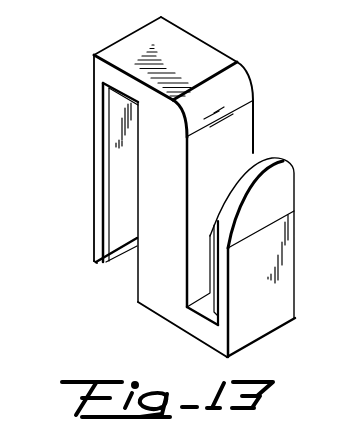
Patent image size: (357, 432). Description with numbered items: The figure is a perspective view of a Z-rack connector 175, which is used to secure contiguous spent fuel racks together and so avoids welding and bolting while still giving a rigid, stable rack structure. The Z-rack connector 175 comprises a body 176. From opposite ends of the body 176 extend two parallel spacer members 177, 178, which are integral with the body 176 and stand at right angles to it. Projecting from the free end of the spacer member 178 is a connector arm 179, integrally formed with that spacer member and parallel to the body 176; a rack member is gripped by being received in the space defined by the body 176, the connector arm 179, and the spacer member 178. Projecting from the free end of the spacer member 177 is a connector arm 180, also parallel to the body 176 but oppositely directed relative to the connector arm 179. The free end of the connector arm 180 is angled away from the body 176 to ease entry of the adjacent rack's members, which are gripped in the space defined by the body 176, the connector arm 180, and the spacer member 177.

The Z-rack connector 175 is at (265, 72).
The body 176 is at (157, 265).
The spacer member 177 is at (193, 327).
The spacer member 178 is at (118, 80).
The connector arm 179 is at (102, 163).
The connector arm 180 is at (282, 197).